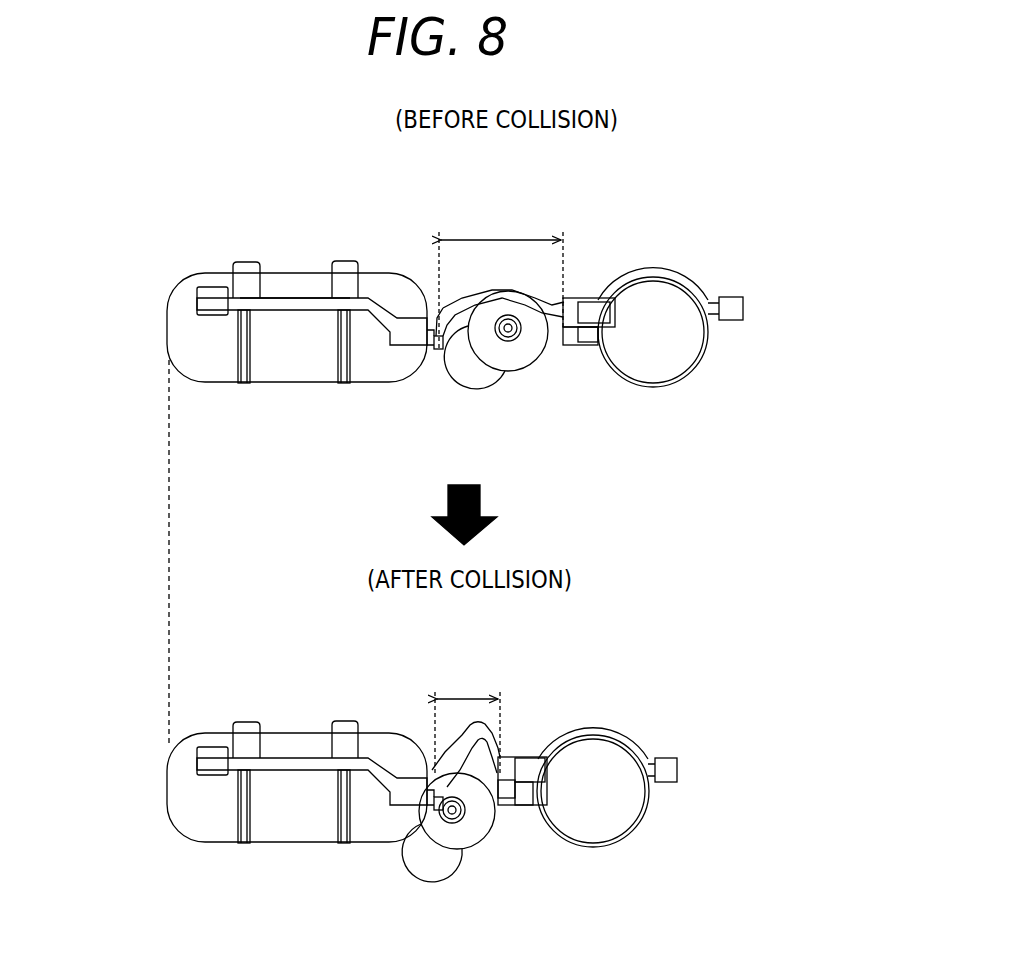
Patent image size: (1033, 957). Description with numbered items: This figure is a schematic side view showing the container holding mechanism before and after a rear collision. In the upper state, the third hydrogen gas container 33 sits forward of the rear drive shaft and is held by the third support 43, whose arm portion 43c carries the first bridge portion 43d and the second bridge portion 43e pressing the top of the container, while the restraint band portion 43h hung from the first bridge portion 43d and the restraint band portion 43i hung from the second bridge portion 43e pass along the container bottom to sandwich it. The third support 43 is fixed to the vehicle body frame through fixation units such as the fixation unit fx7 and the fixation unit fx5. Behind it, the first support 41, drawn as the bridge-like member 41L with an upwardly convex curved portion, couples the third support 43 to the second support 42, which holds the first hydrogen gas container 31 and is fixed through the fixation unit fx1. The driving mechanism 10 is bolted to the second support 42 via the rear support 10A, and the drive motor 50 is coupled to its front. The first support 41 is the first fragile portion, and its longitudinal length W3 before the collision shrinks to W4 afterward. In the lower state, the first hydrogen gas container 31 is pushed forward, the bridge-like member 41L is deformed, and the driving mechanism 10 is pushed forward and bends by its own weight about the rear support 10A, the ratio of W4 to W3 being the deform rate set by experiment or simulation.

The driving mechanism 10 is at (525, 366).
The rear support 10A is at (560, 337).
The first hydrogen gas container 31 is at (662, 356).
The third hydrogen gas container 33 is at (178, 335).
The first support 41 is at (559, 475).
The bridge-like member 41L is at (528, 298).
The second support 42 is at (680, 265).
The third support 43 is at (266, 514).
The arm portion 43c is at (290, 297).
The first bridge portion 43d is at (248, 258).
The second bridge portion 43e is at (345, 258).
The restraint band portion 43h is at (243, 385).
The restraint band portion 43i is at (340, 385).
The drive motor 50 is at (477, 389).
The fixation unit fx1 is at (731, 298).
The fixation unit fx5 is at (405, 345).
The fixation unit fx7 is at (197, 292).
The length of first fragile portion before collision W3 is at (501, 279).
The length of first fragile portion after collision W4 is at (467, 719).